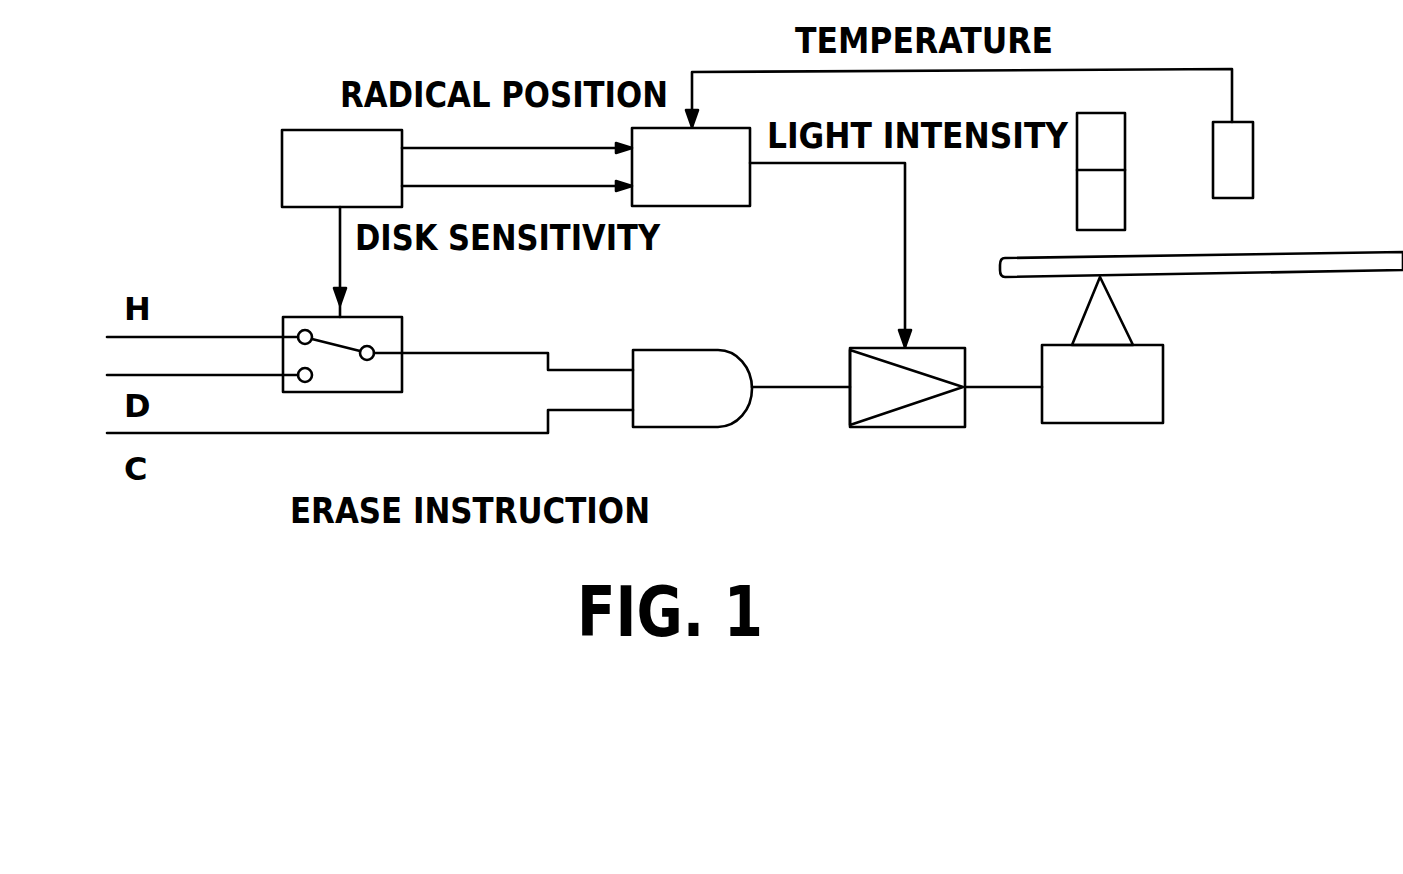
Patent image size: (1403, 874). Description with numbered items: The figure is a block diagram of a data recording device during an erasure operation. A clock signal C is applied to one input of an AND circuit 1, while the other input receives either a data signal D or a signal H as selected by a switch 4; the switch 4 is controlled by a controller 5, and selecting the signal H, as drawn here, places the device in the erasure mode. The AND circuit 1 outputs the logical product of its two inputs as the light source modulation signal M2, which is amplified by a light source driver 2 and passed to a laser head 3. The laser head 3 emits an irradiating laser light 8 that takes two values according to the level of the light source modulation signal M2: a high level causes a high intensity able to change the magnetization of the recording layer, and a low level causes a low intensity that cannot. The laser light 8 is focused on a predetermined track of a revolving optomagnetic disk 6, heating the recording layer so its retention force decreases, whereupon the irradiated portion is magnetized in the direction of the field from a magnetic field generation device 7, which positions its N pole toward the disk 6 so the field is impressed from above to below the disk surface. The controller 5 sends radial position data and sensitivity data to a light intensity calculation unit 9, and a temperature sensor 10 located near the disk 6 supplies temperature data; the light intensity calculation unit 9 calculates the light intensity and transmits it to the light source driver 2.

The AND circuit 1 is at (695, 421).
The light source driver 2 is at (922, 426).
The laser head 3 is at (1115, 413).
The switch 4 is at (390, 332).
The controller 5 is at (292, 160).
The optomagnetic disk 6 is at (1258, 273).
The magnetic field generation device 7 is at (1115, 159).
The laser light 8 is at (1105, 320).
The light intensity calculation unit 9 is at (730, 196).
The temperature sensor 10 is at (1248, 145).
The light source modulation signal M2 is at (805, 390).